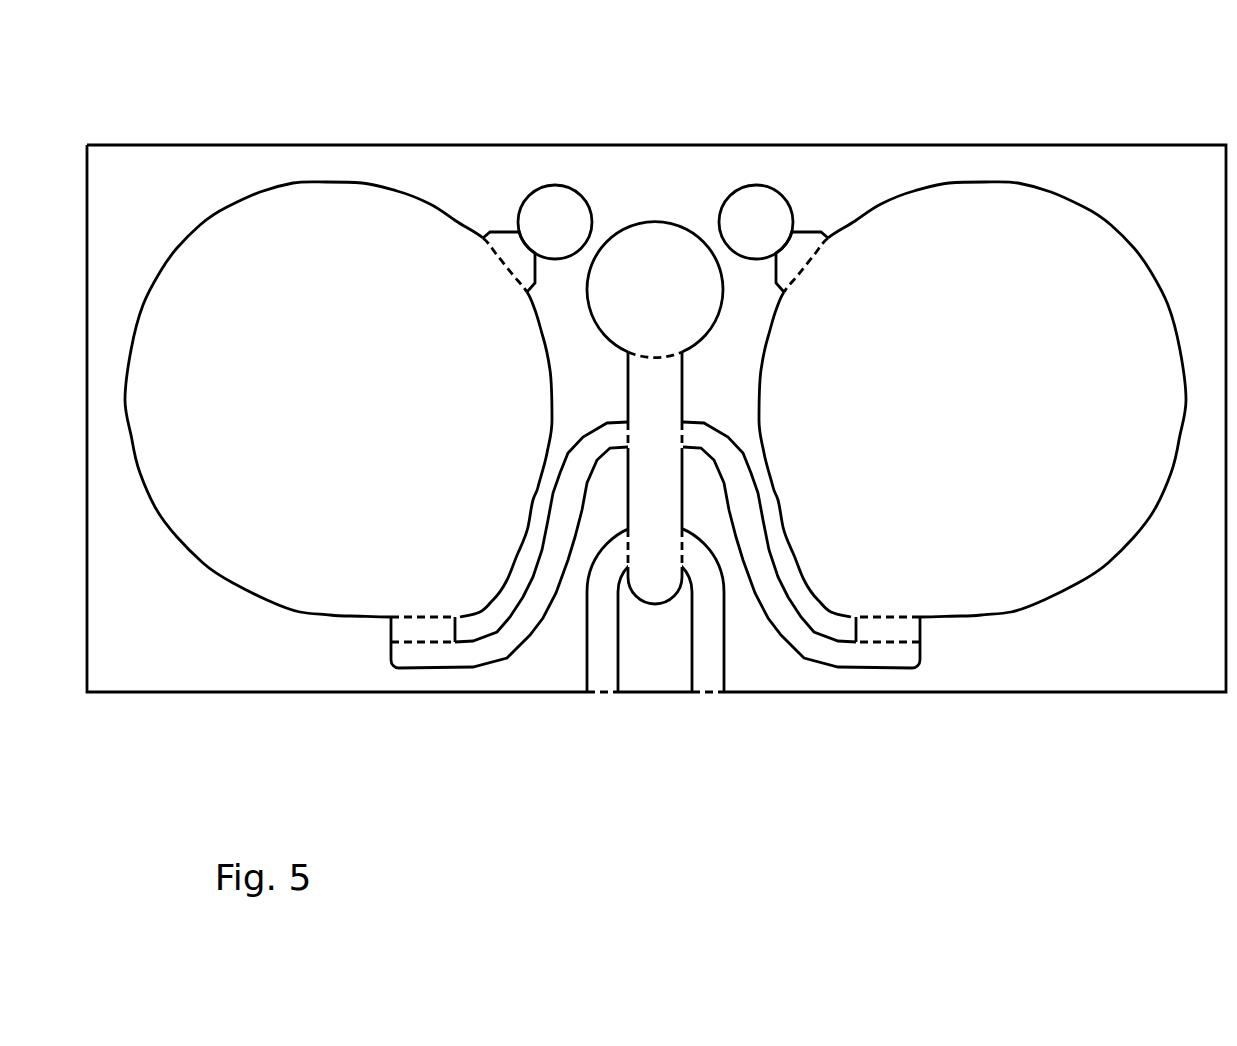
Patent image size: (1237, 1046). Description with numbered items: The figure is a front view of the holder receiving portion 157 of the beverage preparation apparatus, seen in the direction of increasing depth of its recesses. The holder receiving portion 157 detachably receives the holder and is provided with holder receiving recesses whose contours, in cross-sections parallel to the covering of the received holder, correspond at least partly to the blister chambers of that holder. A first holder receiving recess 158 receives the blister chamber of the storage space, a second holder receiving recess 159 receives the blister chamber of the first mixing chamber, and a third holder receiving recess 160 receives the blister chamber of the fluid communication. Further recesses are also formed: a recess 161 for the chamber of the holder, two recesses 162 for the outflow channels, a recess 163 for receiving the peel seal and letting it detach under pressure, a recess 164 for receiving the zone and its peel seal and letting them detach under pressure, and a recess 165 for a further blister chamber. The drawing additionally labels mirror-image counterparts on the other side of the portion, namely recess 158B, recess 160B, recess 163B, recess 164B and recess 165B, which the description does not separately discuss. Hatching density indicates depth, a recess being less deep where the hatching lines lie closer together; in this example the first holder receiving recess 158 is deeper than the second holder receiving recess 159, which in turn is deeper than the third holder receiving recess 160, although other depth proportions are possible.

The holder receiving portion 157 is at (208, 708).
The first holder receiving recess 158 is at (1012, 240).
The channel 158B is at (295, 240).
The second holder receiving recess 159 is at (655, 388).
The third holder receiving recess 160 is at (776, 611).
The wall 160B is at (535, 611).
The recess 161 is at (655, 257).
The recesses 162 is at (602, 669).
The recess 163 is at (888, 630).
The insert 163B is at (423, 630).
The recess 164 is at (808, 245).
The seal element 164B is at (502, 245).
The recess 165 is at (753, 205).
The passage 165B is at (556, 205).